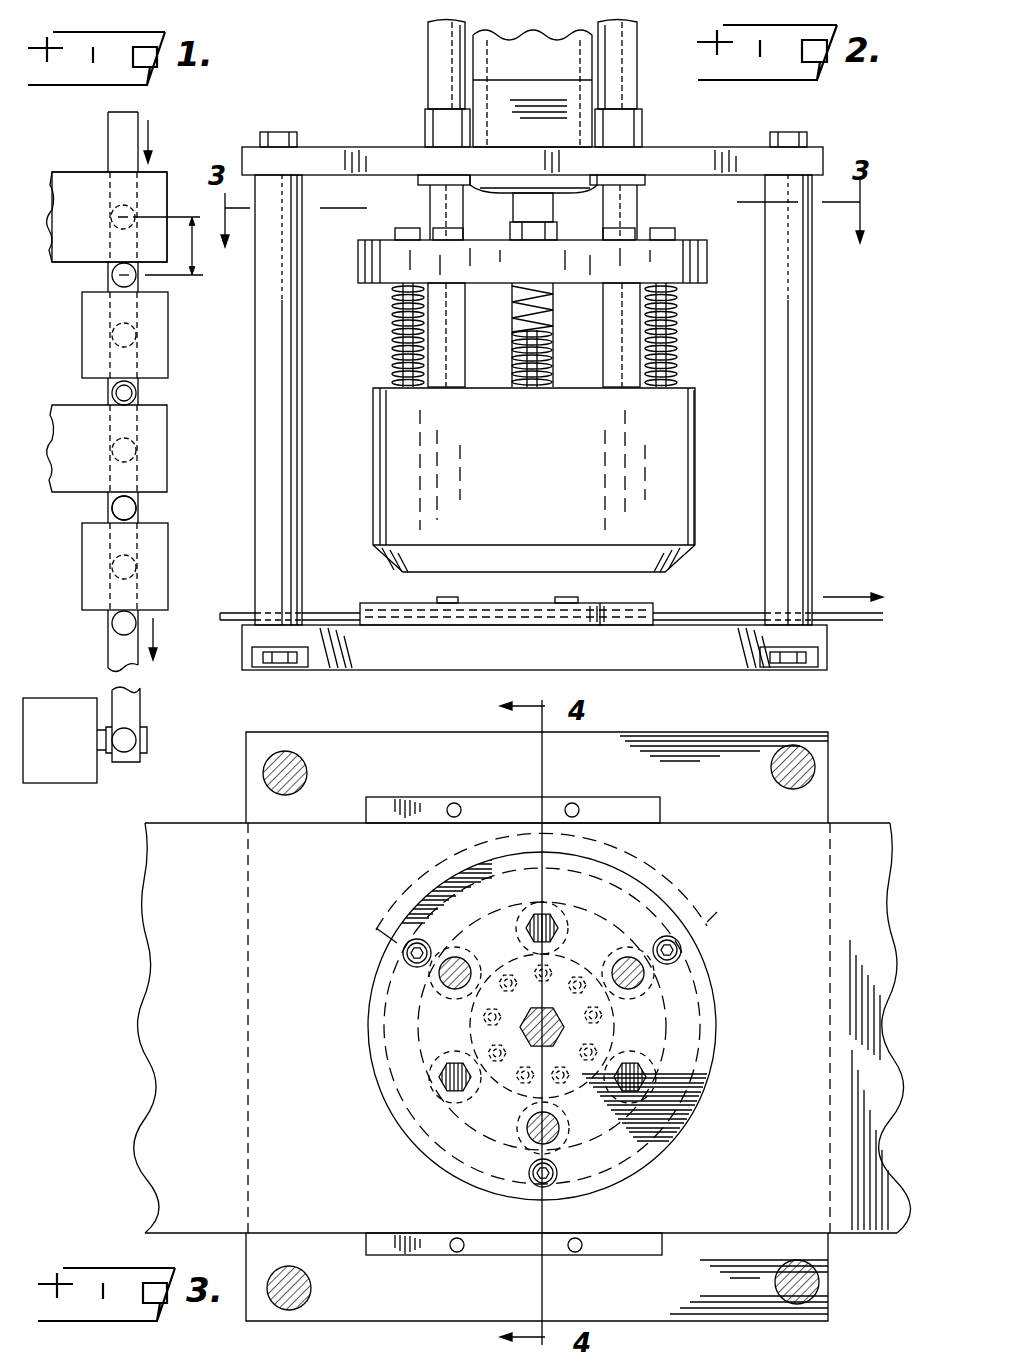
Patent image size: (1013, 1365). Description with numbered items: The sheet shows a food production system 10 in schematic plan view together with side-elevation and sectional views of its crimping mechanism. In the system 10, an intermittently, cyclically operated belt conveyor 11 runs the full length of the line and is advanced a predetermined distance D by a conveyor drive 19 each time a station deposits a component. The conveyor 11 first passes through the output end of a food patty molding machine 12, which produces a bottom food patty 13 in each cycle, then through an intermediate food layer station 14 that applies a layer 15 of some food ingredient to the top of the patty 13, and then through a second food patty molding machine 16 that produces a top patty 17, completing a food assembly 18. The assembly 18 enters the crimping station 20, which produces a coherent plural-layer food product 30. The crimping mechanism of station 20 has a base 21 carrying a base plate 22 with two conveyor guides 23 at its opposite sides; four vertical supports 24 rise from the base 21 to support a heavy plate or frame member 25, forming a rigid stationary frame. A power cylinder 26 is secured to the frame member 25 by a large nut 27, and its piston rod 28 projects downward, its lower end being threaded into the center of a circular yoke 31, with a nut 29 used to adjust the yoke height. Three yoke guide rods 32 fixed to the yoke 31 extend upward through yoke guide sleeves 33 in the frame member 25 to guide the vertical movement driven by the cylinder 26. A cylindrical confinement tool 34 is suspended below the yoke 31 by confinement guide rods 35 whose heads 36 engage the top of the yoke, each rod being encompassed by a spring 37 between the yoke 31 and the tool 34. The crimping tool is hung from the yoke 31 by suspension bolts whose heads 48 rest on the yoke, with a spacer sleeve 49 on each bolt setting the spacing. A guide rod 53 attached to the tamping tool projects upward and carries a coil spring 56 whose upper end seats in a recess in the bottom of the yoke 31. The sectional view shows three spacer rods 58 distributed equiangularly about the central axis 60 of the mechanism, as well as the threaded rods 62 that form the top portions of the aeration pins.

In FIG. 1, the food production system 10 is at (95, 160).
In FIG. 1, the conveyor 11 is at (128, 128).
In FIG. 2, the conveyor 11 is at (752, 610).
In FIG. 3, the conveyor 11 is at (155, 1080).
In FIG. 1, the food patty molding machine 12 is at (162, 188).
In FIG. 1, the food patty 13 is at (110, 274).
In FIG. 1, the intermediate food layer station 14 is at (165, 337).
In FIG. 1, the layer 15 is at (140, 390).
In FIG. 1, the second food patty molding machine 16 is at (168, 452).
In FIG. 1, the top patty 17 is at (138, 505).
In FIG. 1, the food assembly 18 is at (108, 508).
In FIG. 1, the conveyor drive 19 is at (53, 788).
In FIG. 1, the crimping station 20 is at (170, 566).
In FIG. 2, the crimping station 20 is at (366, 125).
In FIG. 3, the crimping station 20 is at (800, 860).
In FIG. 2, the base 21 is at (672, 655).
In FIG. 3, the base 21 is at (828, 1320).
In FIG. 2, the base plate 22 is at (355, 613).
In FIG. 3, the base plate 22 is at (248, 996).
In FIG. 2, the conveyor guides 23 is at (650, 605).
In FIG. 3, the conveyor guides 23 is at (600, 797).
In FIG. 2, the vertical supports 24 is at (300, 490).
In FIG. 3, the vertical supports 24 is at (307, 773).
In FIG. 2, the frame member 25 is at (710, 147).
In FIG. 2, the power cylinder 26 is at (532, 88).
In FIG. 2, the nut 27 is at (578, 183).
In FIG. 2, the piston rod 28 is at (516, 205).
In FIG. 3, the piston rod 28 is at (515, 1030).
In FIG. 2, the nut 29 is at (555, 228).
In FIG. 1, the coherent plural-layer food product 30 is at (113, 623).
In FIG. 2, the yoke 31 is at (707, 254).
In FIG. 3, the yoke 31 is at (430, 1165).
In FIG. 2, the yoke guide rods 32 is at (430, 72).
In FIG. 3, the yoke guide rods 32 is at (627, 960).
In FIG. 2, the yoke guide sleeves 33 is at (425, 127).
In FIG. 2, the cylindrical confinement tool 34 is at (667, 480).
In FIG. 3, the cylindrical confinement tool 34 is at (412, 1140).
In FIG. 2, the confinement guide rods 35 is at (398, 380).
In FIG. 3, the confinement guide rods 35 is at (410, 958).
In FIG. 2, the head 36 is at (398, 232).
In FIG. 3, the head 36 is at (420, 968).
In FIG. 2, the spring 37 is at (398, 343).
In FIG. 2, the heads 48 is at (440, 233).
In FIG. 3, the heads 48 is at (550, 912).
In FIG. 2, the spacer sleeve 49 is at (612, 355).
In FIG. 2, the guide rod 53 is at (553, 330).
In FIG. 2, the coil spring 56 is at (515, 297).
In FIG. 3, the spacer rods 58 is at (542, 1028).
In FIG. 3, the central axis 60 is at (600, 1035).
In FIG. 3, the threaded rod 62 is at (500, 975).